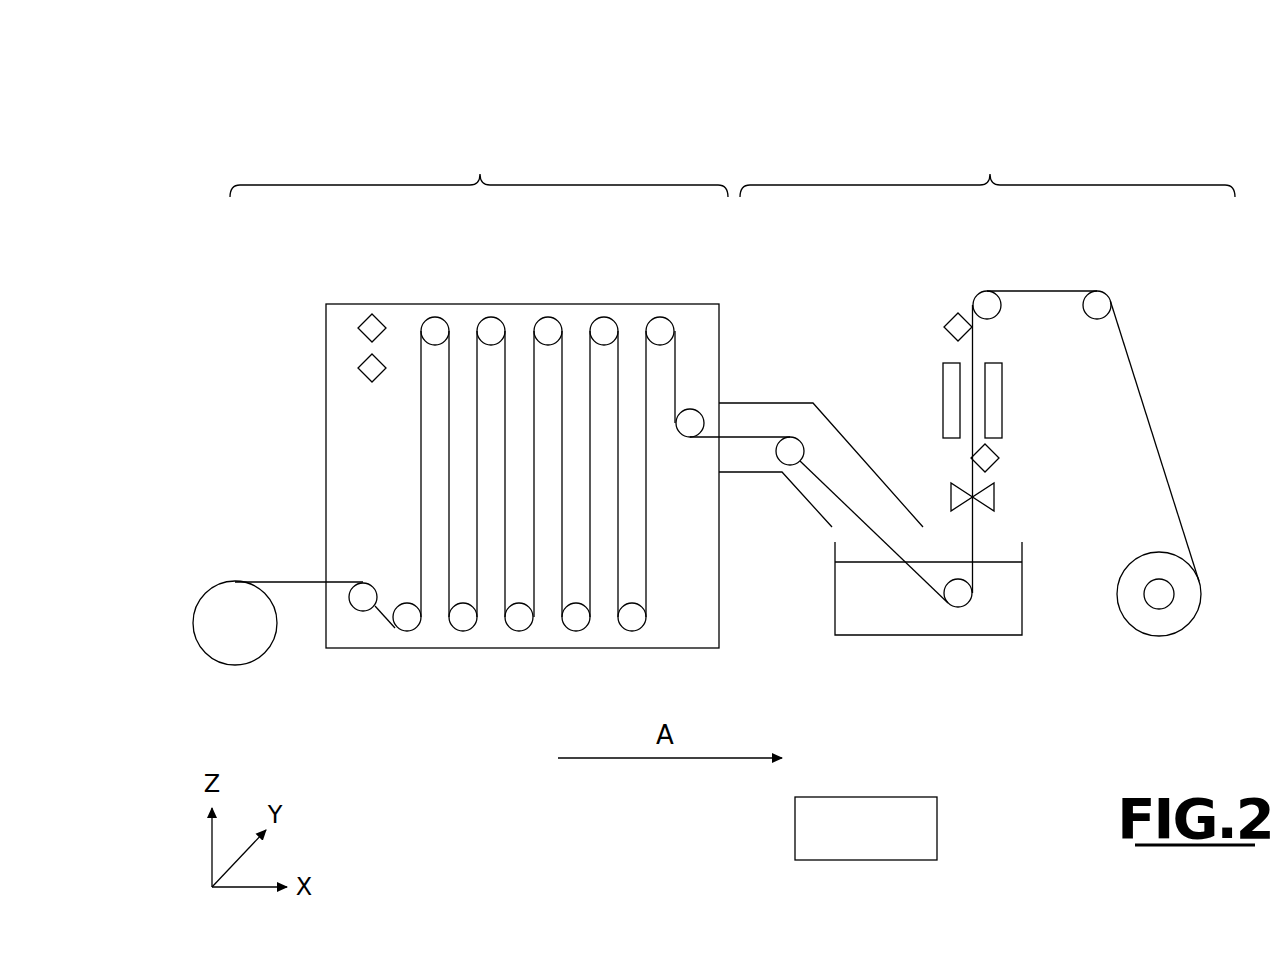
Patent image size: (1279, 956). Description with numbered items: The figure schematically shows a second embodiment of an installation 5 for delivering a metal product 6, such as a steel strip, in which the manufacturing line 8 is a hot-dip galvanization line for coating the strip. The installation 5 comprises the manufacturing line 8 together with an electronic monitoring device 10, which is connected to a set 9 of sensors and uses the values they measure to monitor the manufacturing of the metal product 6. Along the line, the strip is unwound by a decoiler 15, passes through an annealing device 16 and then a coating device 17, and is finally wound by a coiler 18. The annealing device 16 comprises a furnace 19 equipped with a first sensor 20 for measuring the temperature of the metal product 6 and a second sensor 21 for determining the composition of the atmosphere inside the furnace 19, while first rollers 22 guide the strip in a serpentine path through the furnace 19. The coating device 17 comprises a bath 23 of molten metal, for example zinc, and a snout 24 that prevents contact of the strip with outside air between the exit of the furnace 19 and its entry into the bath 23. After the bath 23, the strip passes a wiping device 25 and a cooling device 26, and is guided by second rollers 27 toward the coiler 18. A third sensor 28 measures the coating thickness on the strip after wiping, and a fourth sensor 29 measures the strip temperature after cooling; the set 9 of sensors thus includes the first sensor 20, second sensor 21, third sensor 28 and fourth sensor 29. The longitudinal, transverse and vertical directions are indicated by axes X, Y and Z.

The installation 5 is at (926, 892).
The metal product 6 is at (300, 580).
The manufacturing line 8 is at (1088, 136).
The set of sensors 9 is at (214, 333).
The electronic monitoring device 10 is at (866, 828).
The decoiler 15 is at (238, 635).
The annealing device 16 is at (479, 168).
The coating device 17 is at (987, 168).
The coiler 18 is at (1159, 594).
The furnace 19 is at (430, 648).
The first sensor 20 is at (358, 328).
The second sensor 21 is at (358, 368).
The first rollers 22 is at (463, 617).
The bath 23 is at (898, 635).
The snout 24 is at (757, 403).
The wiping device 25 is at (990, 494).
The cooling device 26 is at (1008, 405).
The second rollers 27 is at (988, 300).
The third sensor 28 is at (999, 452).
The fourth sensor 29 is at (950, 325).